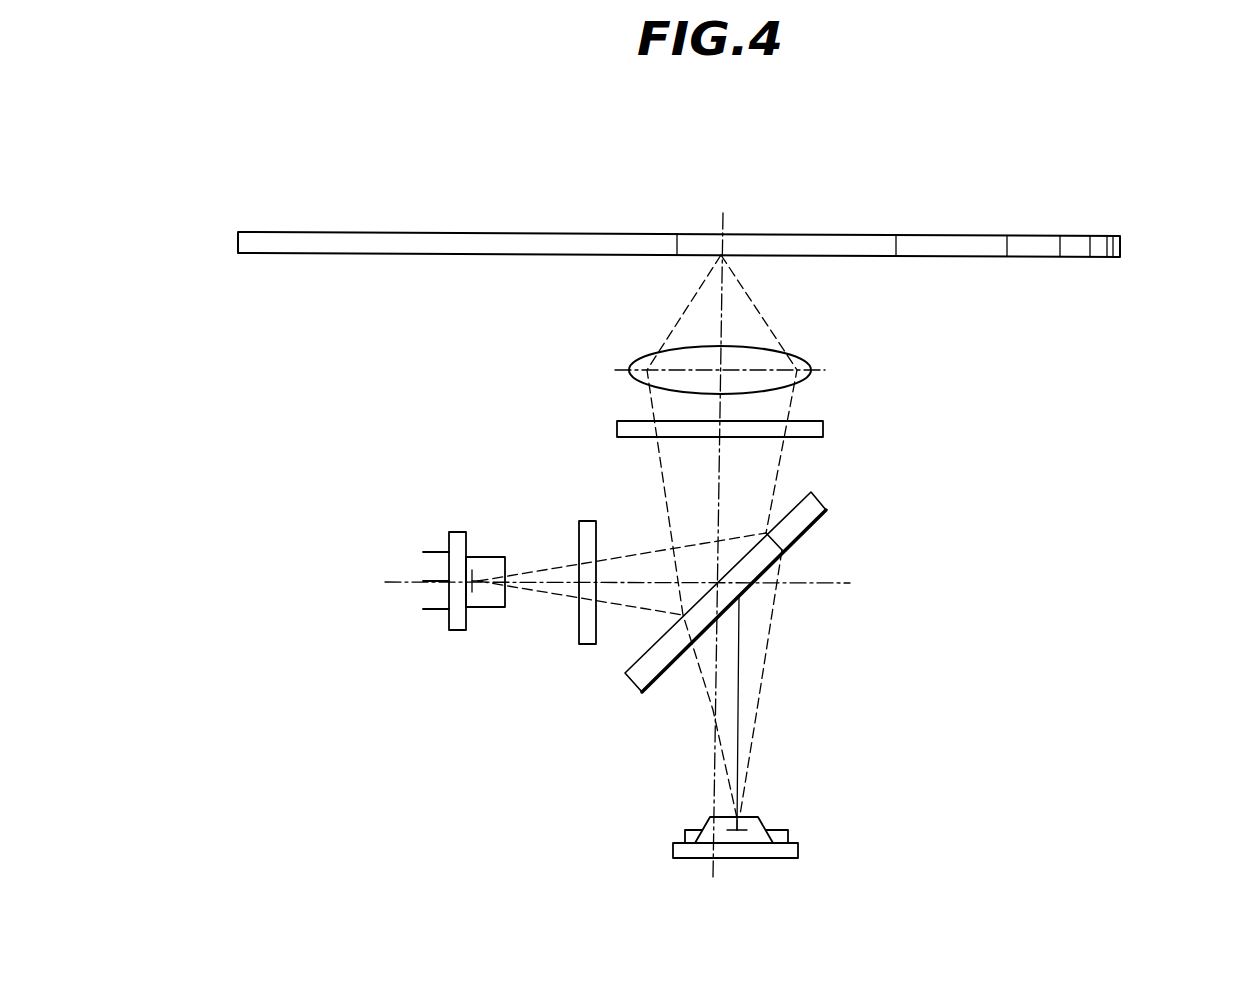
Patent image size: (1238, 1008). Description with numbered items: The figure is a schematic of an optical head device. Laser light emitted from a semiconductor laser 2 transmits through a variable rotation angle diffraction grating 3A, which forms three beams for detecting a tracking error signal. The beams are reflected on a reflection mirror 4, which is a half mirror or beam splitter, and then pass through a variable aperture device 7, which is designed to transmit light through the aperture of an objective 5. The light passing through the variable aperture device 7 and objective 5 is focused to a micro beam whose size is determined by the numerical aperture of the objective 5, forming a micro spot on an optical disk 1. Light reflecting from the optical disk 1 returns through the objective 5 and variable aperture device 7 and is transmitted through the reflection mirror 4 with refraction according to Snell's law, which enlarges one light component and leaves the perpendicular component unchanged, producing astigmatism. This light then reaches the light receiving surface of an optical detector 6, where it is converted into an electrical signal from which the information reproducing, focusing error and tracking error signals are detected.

The optical disk 1 is at (390, 232).
The semiconductor laser 2 is at (453, 632).
The variable rotation angle diffraction grating 3A is at (585, 521).
The reflection mirror 4 is at (826, 510).
The objective 5 is at (806, 358).
The optical detector 6 is at (768, 820).
The variable aperture device 7 is at (823, 428).